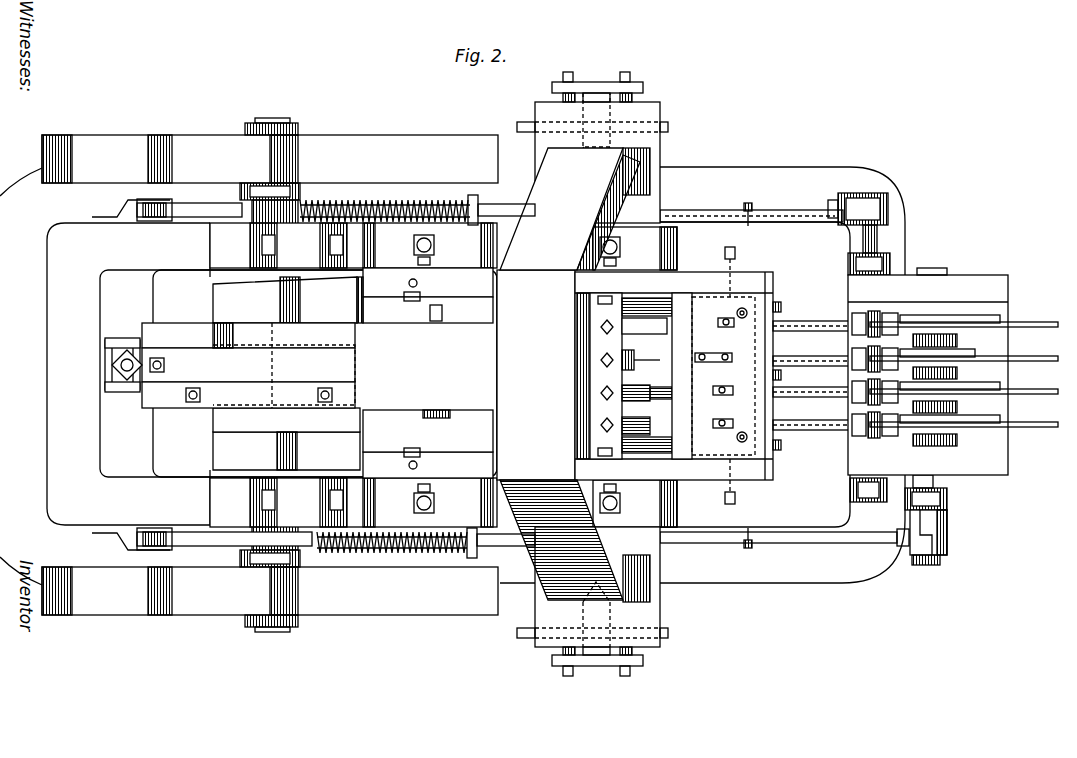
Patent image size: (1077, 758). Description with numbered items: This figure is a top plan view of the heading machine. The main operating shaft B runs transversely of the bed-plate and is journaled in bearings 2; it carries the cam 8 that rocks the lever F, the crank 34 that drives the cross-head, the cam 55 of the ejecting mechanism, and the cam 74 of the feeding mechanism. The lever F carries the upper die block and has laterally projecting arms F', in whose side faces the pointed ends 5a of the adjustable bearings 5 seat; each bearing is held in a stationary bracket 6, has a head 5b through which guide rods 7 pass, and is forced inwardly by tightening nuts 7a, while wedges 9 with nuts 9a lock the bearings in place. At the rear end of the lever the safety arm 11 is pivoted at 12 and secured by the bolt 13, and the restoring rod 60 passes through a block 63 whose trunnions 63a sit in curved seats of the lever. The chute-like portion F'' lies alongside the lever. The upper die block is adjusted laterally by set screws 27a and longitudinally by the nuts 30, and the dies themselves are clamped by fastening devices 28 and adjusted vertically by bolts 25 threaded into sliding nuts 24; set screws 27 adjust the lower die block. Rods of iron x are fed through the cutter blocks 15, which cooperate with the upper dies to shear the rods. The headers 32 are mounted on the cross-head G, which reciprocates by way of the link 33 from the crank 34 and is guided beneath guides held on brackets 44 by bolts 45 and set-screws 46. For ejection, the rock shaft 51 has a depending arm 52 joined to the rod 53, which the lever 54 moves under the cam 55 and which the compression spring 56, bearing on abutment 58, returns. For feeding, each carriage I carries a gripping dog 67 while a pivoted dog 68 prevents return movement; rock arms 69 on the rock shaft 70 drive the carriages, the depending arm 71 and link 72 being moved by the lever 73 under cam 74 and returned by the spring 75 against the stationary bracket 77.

The bearings 2 is at (353, 375).
The adjustable bearings 5 is at (590, 85).
The pointed ends 5a is at (594, 586).
The head 5b is at (605, 85).
The stationary brackets 6 is at (660, 162).
The guide rods 7 is at (552, 90).
The nuts 7a is at (643, 88).
The cam 8 is at (276, 93).
The wedges 9 is at (517, 127).
The nuts 9a is at (668, 127).
The arm 11 is at (248, 365).
The pivotal connection 12 is at (430, 373).
The bolt 13 is at (165, 365).
The cutter blocks 15 is at (54, 212).
The nuts 24 is at (722, 428).
The bolts or set screws 25 is at (732, 366).
The set screws 27 is at (746, 208).
The set screws 27a is at (730, 259).
The fastening devices 28 is at (773, 378).
The nuts 30 is at (736, 313).
The headers 32 is at (634, 358).
The link 33 is at (328, 320).
The crank 34 is at (286, 373).
The brackets 44 is at (462, 466).
The bolts 45 is at (406, 301).
The set-screws 46 is at (417, 283).
The rock shaft 51 is at (863, 240).
The depending arm 52 is at (888, 205).
The rod 53 is at (790, 210).
The lever 54 is at (186, 218).
The cam 55 is at (270, 198).
The coiled compression spring 56 is at (402, 200).
The stationary abutment 58 is at (478, 202).
The rod 60 is at (112, 357).
The block 63 is at (112, 378).
The trunnions 63a is at (128, 342).
The dog 67 is at (900, 410).
The pivotally mounted dog 68 is at (858, 400).
The rock arms 69 is at (910, 342).
The rock shaft 70 is at (935, 562).
The depending arm 71 is at (947, 538).
The rod or link 72 is at (862, 544).
The lever 73 is at (180, 531).
The cam 74 is at (262, 552).
The coiled compression spring 75 is at (362, 554).
The stationary bracket 77 is at (478, 546).
The main operating shaft B is at (275, 123).
The lever F is at (522, 375).
The arms F' is at (570, 209).
The chute F'' is at (561, 540).
The cross-head G is at (590, 386).
The reciprocating carriage I is at (963, 430).
The rod or bar of iron x is at (964, 374).